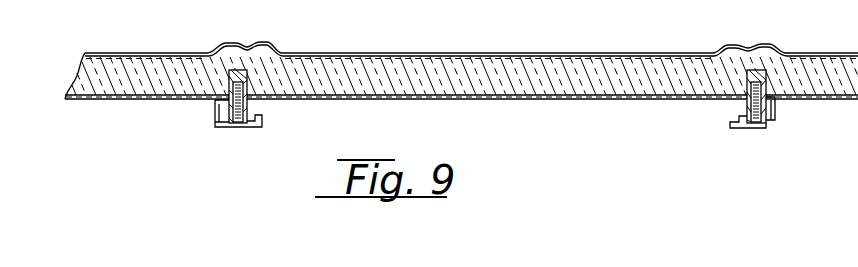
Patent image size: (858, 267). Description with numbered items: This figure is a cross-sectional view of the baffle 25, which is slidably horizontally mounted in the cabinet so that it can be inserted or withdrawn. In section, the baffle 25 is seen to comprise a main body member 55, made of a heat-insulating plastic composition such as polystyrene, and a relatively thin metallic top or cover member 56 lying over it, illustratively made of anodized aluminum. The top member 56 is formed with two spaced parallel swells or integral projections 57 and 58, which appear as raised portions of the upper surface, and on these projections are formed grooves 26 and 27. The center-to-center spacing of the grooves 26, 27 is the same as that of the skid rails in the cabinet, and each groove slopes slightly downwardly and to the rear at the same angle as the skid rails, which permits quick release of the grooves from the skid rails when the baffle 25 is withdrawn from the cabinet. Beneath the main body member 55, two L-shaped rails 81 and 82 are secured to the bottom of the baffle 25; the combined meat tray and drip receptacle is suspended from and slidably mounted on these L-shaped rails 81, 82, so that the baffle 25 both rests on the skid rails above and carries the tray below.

The baffle 25 is at (353, 48).
The groove 26 is at (255, 43).
The groove 27 is at (748, 47).
The main body member 55 is at (460, 99).
The top member 56 is at (525, 55).
The integral projection 57 is at (270, 45).
The integral projection 58 is at (770, 48).
The L-shaped rail 81 is at (223, 120).
The L-shaped rail 82 is at (777, 118).